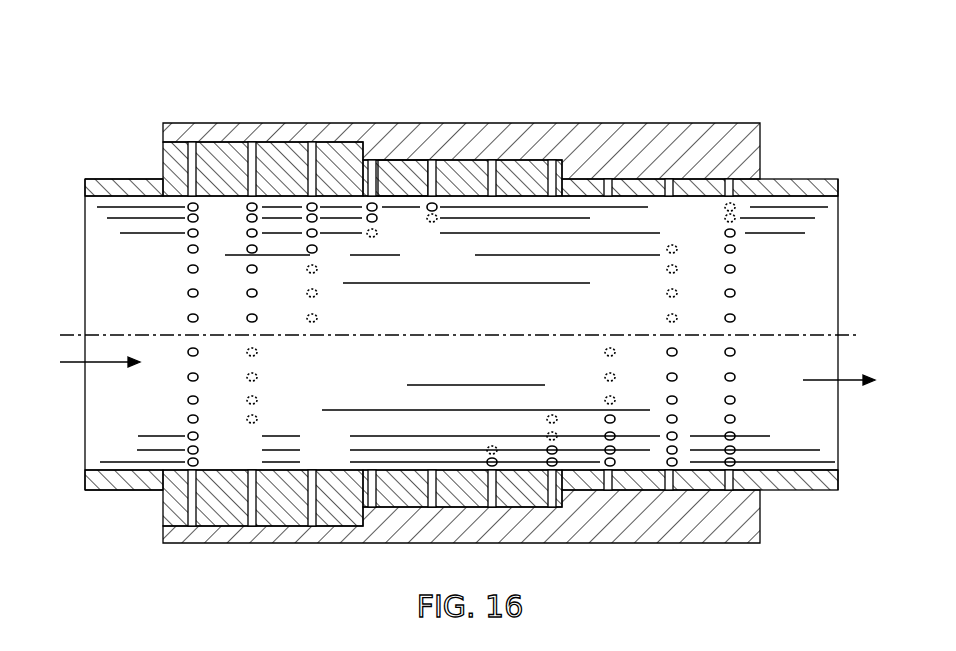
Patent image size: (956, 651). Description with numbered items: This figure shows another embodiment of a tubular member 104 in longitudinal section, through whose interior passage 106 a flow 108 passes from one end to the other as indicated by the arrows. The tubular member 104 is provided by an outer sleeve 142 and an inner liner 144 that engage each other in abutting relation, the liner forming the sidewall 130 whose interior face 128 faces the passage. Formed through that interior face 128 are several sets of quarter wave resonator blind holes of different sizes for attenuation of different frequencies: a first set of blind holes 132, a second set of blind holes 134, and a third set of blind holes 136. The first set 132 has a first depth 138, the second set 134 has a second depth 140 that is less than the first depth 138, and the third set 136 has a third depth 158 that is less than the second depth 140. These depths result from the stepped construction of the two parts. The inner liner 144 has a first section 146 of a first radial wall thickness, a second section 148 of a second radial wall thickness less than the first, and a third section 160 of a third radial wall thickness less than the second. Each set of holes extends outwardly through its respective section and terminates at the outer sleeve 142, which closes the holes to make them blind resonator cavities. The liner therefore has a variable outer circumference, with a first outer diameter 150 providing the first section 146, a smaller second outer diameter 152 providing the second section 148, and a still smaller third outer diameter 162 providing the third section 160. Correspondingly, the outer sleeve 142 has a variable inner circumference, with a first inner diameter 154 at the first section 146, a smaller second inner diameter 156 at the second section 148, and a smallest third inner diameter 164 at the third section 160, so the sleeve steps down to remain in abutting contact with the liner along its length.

The tube 104 is at (810, 330).
The flow passage 106 is at (481, 316).
The flow direction 108 is at (100, 362).
The interior face 128 is at (88, 197).
The sidewall 130 is at (85, 183).
The first set of quarter wave resonator blind holes 132 is at (197, 273).
The second set of quarter wave resonator blind holes 134 is at (430, 222).
The third set of quarter wave resonator blind holes 136 is at (676, 273).
The first depth 138 is at (165, 150).
The second depth 140 is at (393, 162).
The outer sleeve 142 is at (178, 145).
The inner liner 144 is at (102, 178).
The first section 146 is at (267, 160).
The second section 148 is at (464, 163).
The first outer diameter 150 is at (290, 165).
The second outer diameter 152 is at (437, 165).
The first inner diameter 154 is at (343, 165).
The second inner diameter 156 is at (541, 165).
The third depth 158 is at (770, 188).
The third section 160 is at (622, 178).
The third outer diameter 162 is at (644, 178).
The third inner diameter 164 is at (709, 178).